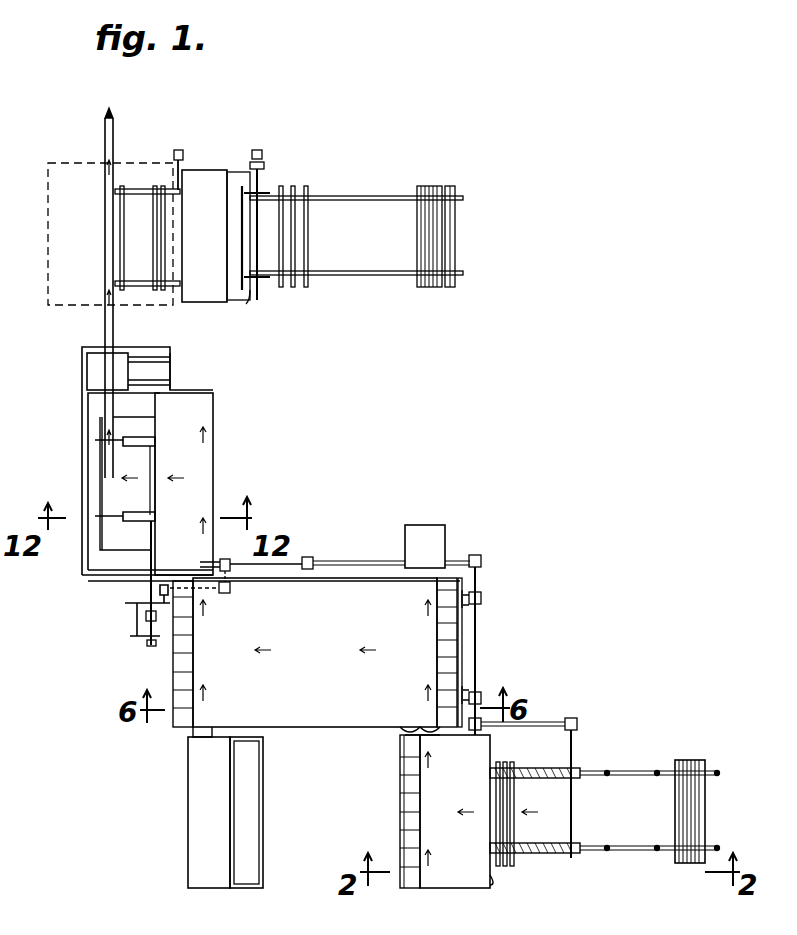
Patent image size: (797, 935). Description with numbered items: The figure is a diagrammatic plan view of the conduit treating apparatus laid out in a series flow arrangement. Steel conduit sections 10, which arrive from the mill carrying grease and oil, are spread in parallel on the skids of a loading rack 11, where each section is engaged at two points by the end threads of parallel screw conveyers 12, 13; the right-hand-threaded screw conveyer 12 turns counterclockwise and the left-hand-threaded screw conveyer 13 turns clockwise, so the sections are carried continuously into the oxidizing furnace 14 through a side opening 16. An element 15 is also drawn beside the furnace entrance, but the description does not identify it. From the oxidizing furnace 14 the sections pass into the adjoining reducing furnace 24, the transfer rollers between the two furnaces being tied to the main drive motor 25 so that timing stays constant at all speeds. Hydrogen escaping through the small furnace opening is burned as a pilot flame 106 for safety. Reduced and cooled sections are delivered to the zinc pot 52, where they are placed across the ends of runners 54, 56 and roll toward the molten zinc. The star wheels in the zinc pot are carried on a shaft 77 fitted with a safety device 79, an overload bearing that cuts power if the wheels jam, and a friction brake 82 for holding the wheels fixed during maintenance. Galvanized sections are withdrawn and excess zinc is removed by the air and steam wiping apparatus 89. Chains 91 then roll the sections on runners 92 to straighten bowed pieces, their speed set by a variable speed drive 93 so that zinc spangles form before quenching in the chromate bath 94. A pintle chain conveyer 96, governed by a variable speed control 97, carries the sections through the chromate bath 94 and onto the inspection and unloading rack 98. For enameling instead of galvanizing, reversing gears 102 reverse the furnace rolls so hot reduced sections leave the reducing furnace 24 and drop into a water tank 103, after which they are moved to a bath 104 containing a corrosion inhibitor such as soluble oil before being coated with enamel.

The steel conduit sections 10 is at (686, 760).
The loading rack 11 is at (645, 760).
The screw conveyer 12 is at (540, 769).
The screw conveyer 13 is at (545, 853).
The oxidizing furnace 14 is at (449, 895).
The connecting rod assembly 15 is at (486, 732).
The opening 16 is at (492, 880).
The reducing furnace 24 is at (327, 735).
The main drive motor 25 is at (445, 542).
The zinc pot 52 is at (92, 584).
The runner 54 is at (95, 516).
The runner 56 is at (95, 440).
The shaft 77 is at (150, 583).
The safety device 79 is at (143, 623).
The friction brake 82 is at (150, 647).
The air and steam wiping apparatus 89 is at (96, 322).
The chains 91 is at (150, 189).
The runners 92 is at (128, 196).
The variable speed drive 93 is at (178, 150).
The chromate bath 94 is at (212, 168).
The pintle chain conveyer 96 is at (250, 296).
The variable speed control 97 is at (258, 150).
The inspection and unloading rack 98 is at (349, 197).
The reversing gears 102 is at (232, 550).
The water tank 103 is at (182, 868).
The bath containing a corrosion inhibitor 104 is at (262, 866).
The pilot flame 106 is at (408, 732).